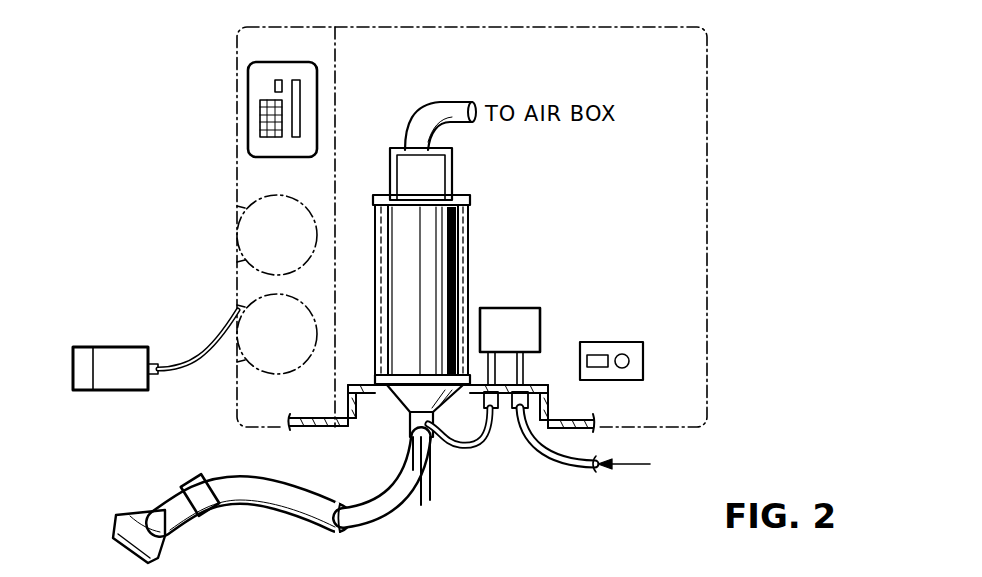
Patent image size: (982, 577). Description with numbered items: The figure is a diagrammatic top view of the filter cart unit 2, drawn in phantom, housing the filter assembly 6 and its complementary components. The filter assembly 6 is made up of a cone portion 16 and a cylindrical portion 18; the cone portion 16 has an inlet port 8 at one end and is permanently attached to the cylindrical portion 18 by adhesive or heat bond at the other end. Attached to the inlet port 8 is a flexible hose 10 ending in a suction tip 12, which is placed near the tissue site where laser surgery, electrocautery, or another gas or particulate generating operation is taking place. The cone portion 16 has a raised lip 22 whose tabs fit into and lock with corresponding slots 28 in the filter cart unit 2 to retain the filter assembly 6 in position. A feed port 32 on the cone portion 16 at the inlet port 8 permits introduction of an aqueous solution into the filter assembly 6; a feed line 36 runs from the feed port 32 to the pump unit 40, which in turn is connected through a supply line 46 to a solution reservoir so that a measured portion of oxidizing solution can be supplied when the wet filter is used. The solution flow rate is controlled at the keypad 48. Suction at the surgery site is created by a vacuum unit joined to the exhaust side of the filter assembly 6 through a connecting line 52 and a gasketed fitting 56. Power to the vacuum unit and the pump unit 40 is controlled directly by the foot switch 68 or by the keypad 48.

The filter cart unit 2 is at (796, 130).
The filter assembly 6 is at (405, 407).
The inlet port 8 is at (440, 437).
The flexible hose 10 is at (290, 479).
The suction tip 12 is at (112, 532).
The cone portion 16 is at (396, 383).
The cylindrical portion 18 is at (444, 237).
The raised lip 22 is at (380, 376).
The slots 28 is at (373, 398).
The feed port 32 is at (426, 505).
The feed line 36 is at (476, 441).
The pump unit 40 is at (513, 341).
The supply line 46 is at (586, 462).
The keypad 48 is at (262, 118).
The connecting line 52 is at (437, 102).
The gasketed fitting 56 is at (460, 197).
The foot switch 68 is at (115, 345).